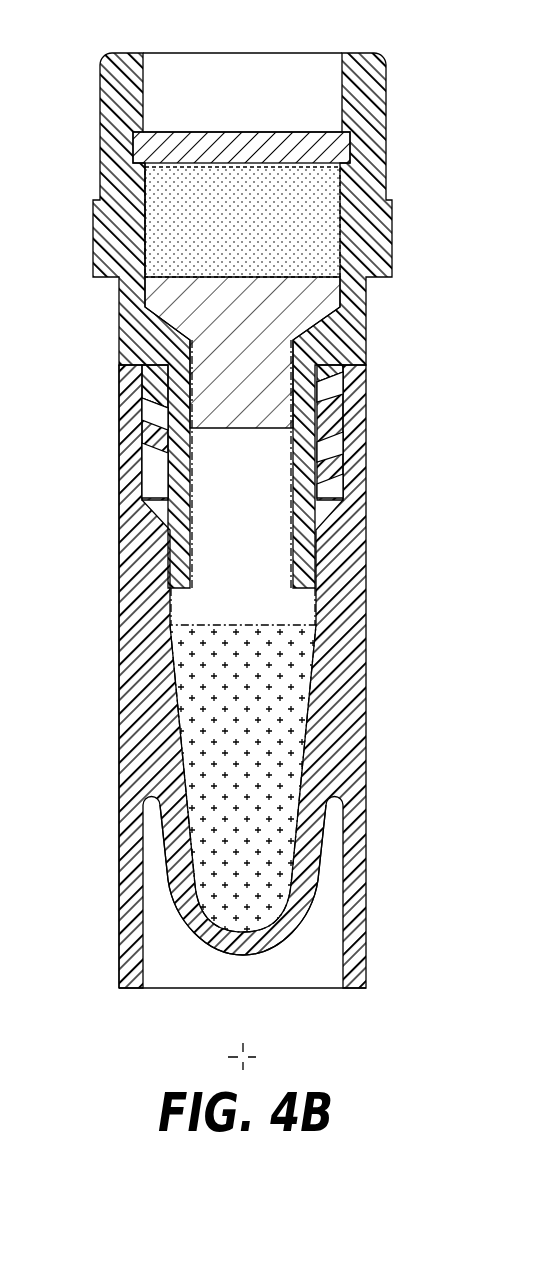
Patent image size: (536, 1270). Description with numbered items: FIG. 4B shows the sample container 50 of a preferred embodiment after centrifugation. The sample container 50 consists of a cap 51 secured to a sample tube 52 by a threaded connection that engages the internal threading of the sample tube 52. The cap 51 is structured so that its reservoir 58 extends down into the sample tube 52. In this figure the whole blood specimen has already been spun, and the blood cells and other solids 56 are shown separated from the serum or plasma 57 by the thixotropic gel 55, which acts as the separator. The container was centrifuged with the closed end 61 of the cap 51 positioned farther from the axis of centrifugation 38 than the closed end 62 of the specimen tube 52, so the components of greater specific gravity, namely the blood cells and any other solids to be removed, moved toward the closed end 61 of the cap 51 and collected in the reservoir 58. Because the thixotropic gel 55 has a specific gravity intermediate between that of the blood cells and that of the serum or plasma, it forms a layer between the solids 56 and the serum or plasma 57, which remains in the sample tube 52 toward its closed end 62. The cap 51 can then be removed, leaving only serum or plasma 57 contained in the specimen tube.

The sample container 50 is at (102, 527).
The cap 51 is at (88, 80).
The sample tube 52 is at (118, 823).
The thixotropic gel 55 is at (209, 319).
The blood cells and other solids 56 is at (299, 233).
The serum or plasma 57 is at (209, 723).
The reservoir 58 is at (145, 222).
The closed end of the cap 61 is at (277, 80).
The closed end of the specimen tube 62 is at (288, 943).
The axis of centrifugation 38 is at (238, 1049).